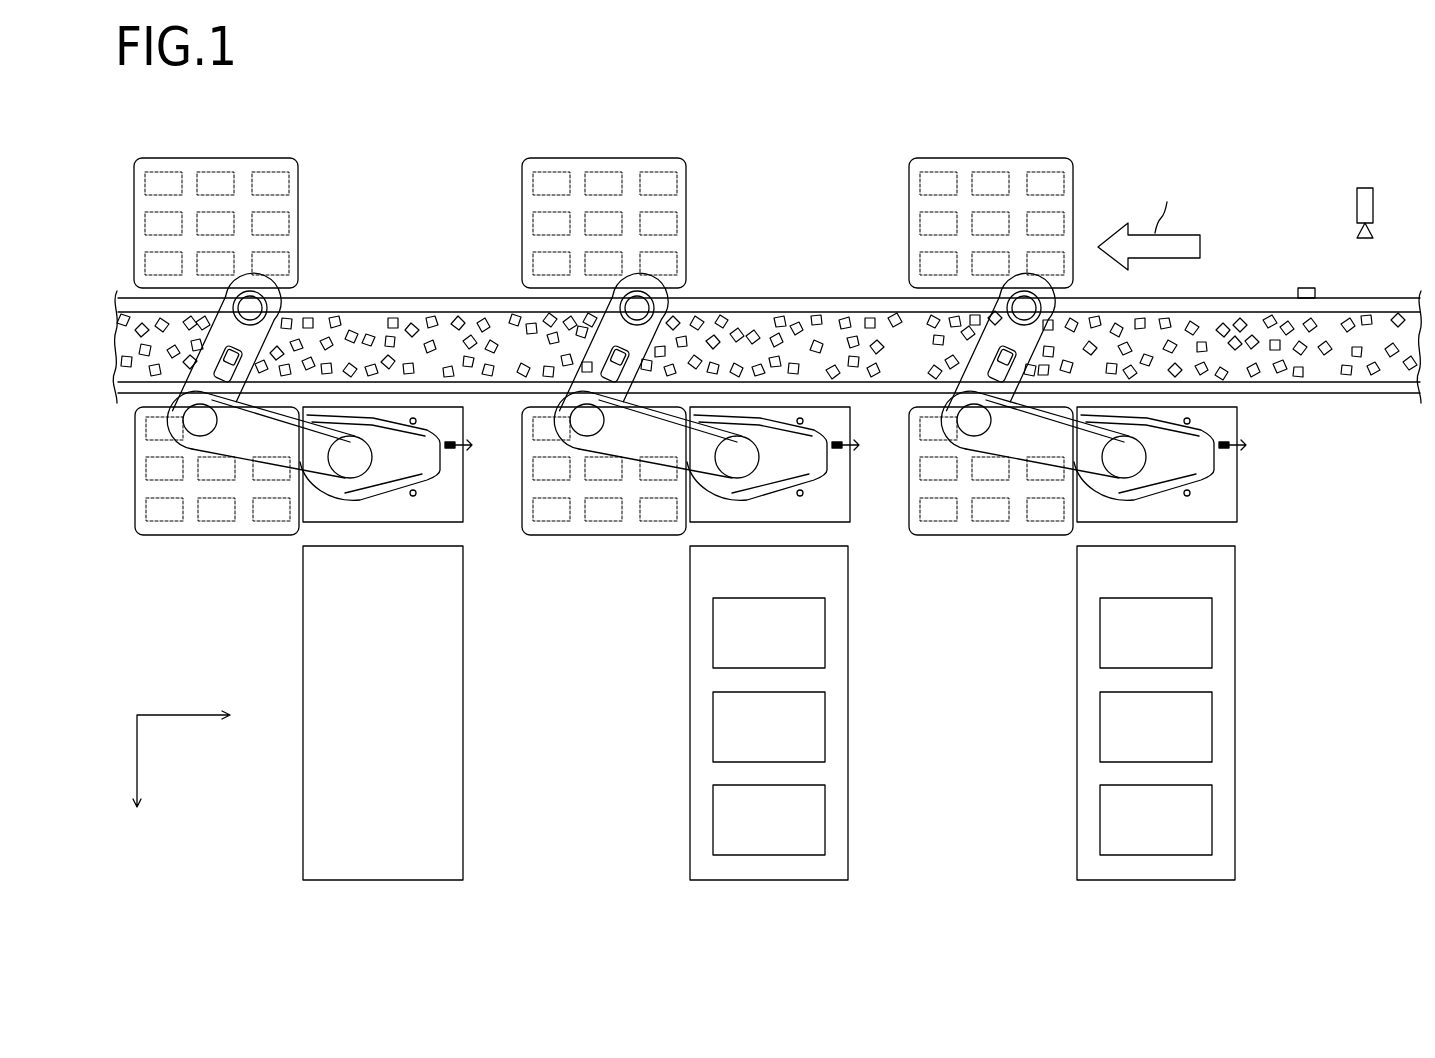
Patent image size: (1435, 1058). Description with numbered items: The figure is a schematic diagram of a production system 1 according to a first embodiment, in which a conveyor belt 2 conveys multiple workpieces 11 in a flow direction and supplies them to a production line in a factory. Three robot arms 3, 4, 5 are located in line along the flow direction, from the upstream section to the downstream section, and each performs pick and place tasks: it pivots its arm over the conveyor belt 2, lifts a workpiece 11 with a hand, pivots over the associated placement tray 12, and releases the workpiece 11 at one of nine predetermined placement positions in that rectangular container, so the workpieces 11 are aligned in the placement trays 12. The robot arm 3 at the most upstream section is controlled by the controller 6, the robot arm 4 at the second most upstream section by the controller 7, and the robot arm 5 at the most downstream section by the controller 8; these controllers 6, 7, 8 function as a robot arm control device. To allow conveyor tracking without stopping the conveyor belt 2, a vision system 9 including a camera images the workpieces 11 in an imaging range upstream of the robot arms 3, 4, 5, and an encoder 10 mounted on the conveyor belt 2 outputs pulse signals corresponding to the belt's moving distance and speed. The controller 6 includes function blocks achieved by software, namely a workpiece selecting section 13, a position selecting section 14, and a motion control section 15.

The production system 1 is at (690, 75).
The conveyor belt 2 is at (824, 298).
The robot arm 3 is at (1215, 468).
The robot arm 4 is at (828, 468).
The robot arm 5 is at (441, 468).
The controller 6 is at (1235, 578).
The controller 7 is at (848, 578).
The controller 8 is at (463, 585).
The vision system 9 is at (1362, 187).
The encoder 10 is at (1307, 287).
The workpiece 11 is at (392, 318).
The placement tray 12 is at (212, 158).
The workpiece selecting section 13 is at (825, 632).
The position selecting section 14 is at (825, 727).
The motion control section 15 is at (825, 820).